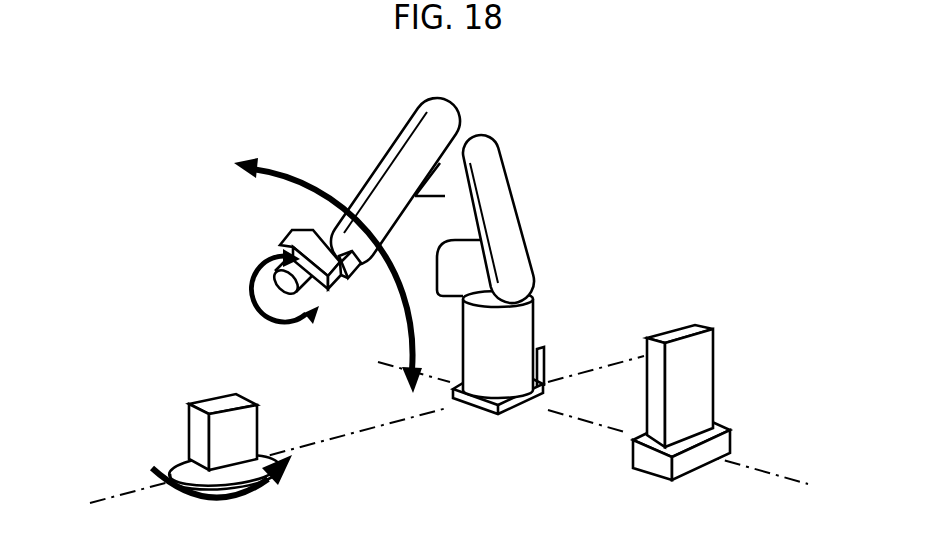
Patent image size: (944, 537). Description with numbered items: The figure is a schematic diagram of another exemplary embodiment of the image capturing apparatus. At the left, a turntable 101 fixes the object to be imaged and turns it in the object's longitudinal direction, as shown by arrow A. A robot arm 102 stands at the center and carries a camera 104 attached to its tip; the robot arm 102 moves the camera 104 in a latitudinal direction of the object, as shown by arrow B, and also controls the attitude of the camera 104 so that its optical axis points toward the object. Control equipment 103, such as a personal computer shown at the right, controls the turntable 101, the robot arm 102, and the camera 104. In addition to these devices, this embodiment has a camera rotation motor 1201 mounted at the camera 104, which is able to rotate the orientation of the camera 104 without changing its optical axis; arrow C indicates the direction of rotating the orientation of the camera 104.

The turntable 101 is at (178, 462).
The robot arm 102 is at (500, 240).
The control equipment 103 is at (683, 390).
The camera 104 is at (276, 242).
The camera rotation motor 1201 is at (304, 274).
The arrow A is at (155, 468).
The arrow B is at (302, 170).
The arrow C is at (266, 294).